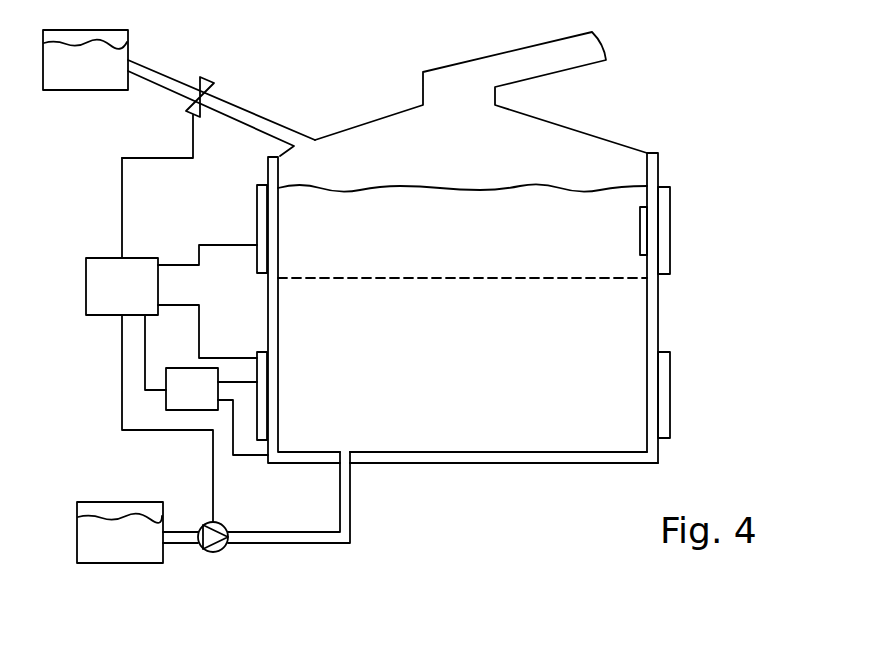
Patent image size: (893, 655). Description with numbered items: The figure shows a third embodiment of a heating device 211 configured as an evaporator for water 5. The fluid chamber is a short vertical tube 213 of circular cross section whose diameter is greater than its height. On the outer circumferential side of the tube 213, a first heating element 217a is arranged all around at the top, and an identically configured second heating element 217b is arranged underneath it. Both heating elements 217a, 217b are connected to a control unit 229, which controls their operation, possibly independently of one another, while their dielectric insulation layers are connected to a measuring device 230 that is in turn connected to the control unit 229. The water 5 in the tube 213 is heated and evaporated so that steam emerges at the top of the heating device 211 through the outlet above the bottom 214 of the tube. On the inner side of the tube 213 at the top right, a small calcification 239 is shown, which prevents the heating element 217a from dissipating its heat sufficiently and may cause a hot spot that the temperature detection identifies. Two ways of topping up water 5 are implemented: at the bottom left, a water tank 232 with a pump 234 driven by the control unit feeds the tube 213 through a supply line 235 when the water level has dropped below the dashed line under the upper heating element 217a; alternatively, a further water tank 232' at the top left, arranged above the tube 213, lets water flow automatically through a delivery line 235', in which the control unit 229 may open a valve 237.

The heating device 211 is at (737, 86).
The vertical tube 213 is at (655, 308).
The vessel bottom 214 is at (505, 465).
The first heating element 217a is at (257, 212).
The second heating element 217b is at (265, 353).
The control unit 229 is at (171, 340).
The measuring device 230 is at (178, 400).
The water tank 232 is at (120, 573).
The further water tank 232' is at (85, 101).
The pump 234 is at (222, 552).
The lower supply line 235 is at (256, 548).
The delivery line 235' is at (218, 84).
The valve 237 is at (215, 82).
The calcification 239 is at (645, 237).
The water 5 is at (265, 302).